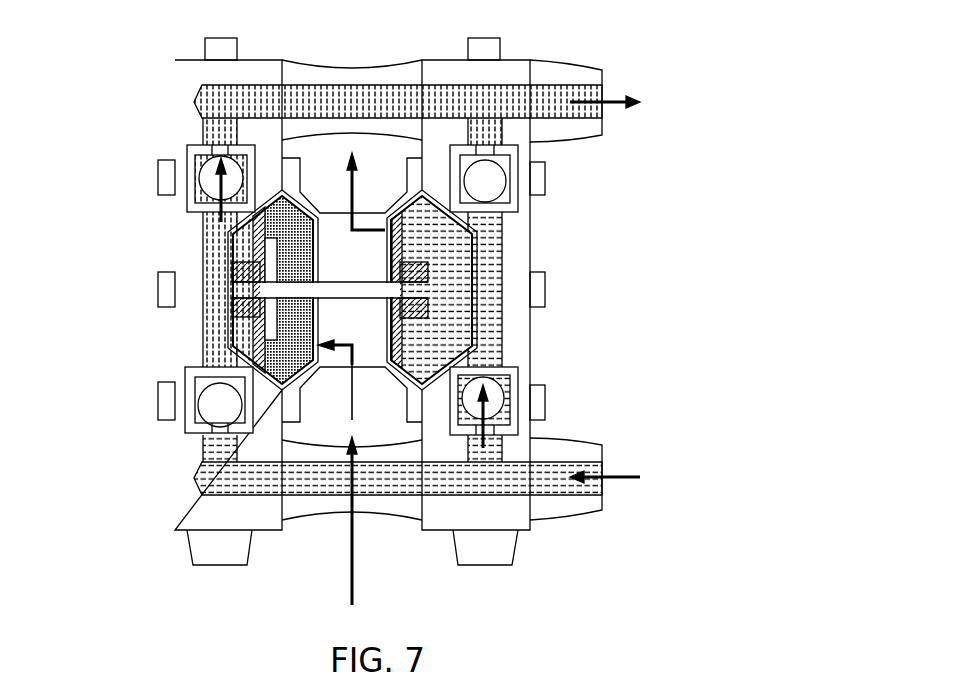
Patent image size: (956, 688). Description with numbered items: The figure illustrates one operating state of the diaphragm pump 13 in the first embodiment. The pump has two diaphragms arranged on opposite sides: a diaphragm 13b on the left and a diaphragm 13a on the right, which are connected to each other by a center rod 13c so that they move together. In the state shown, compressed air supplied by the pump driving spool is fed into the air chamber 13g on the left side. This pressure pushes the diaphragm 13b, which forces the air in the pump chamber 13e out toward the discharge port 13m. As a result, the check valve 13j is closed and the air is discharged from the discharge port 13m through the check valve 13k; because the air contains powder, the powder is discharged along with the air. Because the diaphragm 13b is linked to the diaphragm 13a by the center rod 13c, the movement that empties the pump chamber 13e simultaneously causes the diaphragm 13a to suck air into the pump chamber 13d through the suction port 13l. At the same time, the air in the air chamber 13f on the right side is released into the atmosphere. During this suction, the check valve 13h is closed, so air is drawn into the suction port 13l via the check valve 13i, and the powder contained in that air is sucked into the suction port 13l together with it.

The diaphragm pump 13 is at (156, 30).
The diaphragm 13a is at (407, 232).
The diaphragm 13b is at (228, 242).
The center rod 13c is at (325, 280).
The pump chamber 13d is at (462, 289).
The pump chamber 13e is at (242, 334).
The air chamber 13f is at (390, 352).
The air chamber 13g is at (297, 312).
The check valve 13h is at (512, 207).
The check valve 13i is at (512, 428).
The check valve 13j is at (190, 430).
The check valve 13k is at (192, 207).
The suction port 13l is at (602, 502).
The discharge port 13m is at (602, 78).